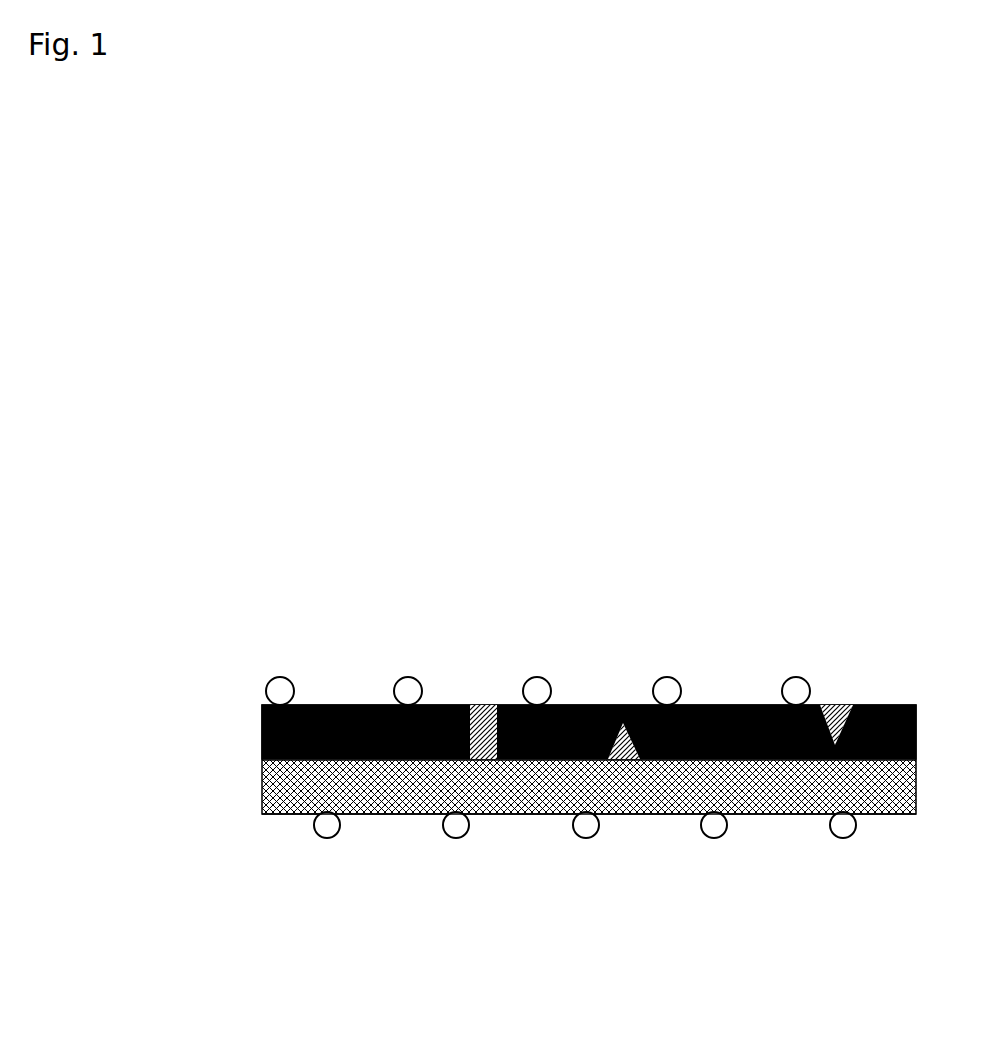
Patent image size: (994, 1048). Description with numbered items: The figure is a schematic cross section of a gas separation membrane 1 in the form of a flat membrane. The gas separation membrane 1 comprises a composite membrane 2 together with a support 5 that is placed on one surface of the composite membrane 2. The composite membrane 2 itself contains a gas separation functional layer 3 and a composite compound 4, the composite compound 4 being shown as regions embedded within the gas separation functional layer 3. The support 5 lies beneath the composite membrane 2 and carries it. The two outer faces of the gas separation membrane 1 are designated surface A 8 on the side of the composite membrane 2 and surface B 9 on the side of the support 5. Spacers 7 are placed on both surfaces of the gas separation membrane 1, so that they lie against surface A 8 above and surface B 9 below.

The gas separation membrane 1 is at (589, 668).
The composite membrane 2 is at (667, 440).
The gas separation functional layer 3 is at (344, 705).
The composite compound 4 is at (487, 705).
The support 5 is at (773, 788).
The spacer 7 is at (457, 826).
The surface A 8 is at (752, 682).
The surface B 9 is at (388, 850).